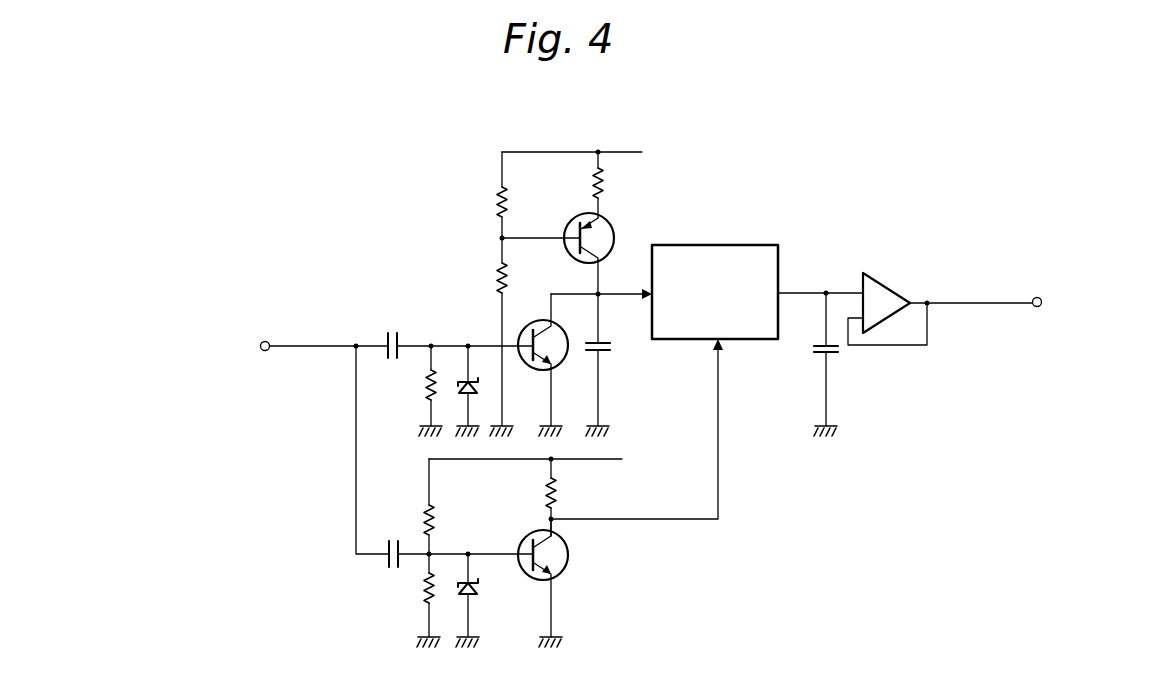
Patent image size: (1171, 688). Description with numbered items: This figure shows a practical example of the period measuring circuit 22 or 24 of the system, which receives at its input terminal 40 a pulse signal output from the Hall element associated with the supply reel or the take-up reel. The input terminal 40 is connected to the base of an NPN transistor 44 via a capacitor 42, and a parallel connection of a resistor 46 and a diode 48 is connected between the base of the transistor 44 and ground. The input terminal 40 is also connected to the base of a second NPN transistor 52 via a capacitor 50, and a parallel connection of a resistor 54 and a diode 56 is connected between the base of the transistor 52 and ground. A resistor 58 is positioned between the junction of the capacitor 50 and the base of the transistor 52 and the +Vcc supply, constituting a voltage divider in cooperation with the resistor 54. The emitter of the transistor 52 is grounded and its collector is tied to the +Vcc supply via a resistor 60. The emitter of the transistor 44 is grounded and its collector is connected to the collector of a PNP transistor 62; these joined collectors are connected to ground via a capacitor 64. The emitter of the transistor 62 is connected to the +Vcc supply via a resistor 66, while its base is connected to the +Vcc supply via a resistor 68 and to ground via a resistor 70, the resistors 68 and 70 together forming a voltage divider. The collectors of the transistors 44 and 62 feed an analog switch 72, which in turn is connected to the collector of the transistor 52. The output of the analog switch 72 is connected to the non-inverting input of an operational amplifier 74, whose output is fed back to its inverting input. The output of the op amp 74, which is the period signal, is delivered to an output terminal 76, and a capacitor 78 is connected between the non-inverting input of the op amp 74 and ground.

The period measuring circuit 22 is at (612, 376).
The period measuring circuit 24 is at (612, 394).
The input terminal 40 is at (265, 351).
The capacitor 42 is at (393, 330).
The NPN transistor 44 is at (565, 362).
The resistor 46 is at (425, 385).
The diode 48 is at (458, 384).
The capacitor 50 is at (390, 570).
The NPN transistor 52 is at (568, 564).
The resistor 54 is at (425, 598).
The diode 56 is at (478, 590).
The resistor 58 is at (425, 512).
The resistor 60 is at (558, 492).
The PNP transistor 62 is at (612, 230).
The capacitor 64 is at (609, 348).
The resistor 66 is at (594, 178).
The resistor 68 is at (497, 195).
The resistor 70 is at (497, 272).
The analog switch 72 is at (735, 245).
The operational amplifier 74 is at (885, 285).
The output terminal 76 is at (1037, 307).
The capacitor 78 is at (815, 350).